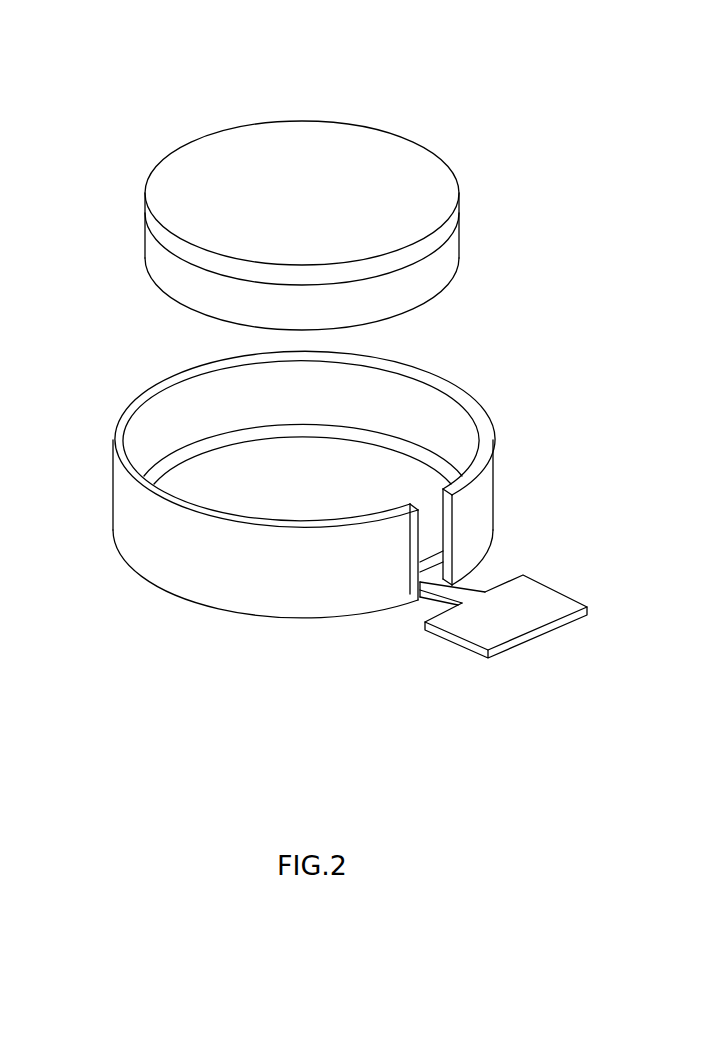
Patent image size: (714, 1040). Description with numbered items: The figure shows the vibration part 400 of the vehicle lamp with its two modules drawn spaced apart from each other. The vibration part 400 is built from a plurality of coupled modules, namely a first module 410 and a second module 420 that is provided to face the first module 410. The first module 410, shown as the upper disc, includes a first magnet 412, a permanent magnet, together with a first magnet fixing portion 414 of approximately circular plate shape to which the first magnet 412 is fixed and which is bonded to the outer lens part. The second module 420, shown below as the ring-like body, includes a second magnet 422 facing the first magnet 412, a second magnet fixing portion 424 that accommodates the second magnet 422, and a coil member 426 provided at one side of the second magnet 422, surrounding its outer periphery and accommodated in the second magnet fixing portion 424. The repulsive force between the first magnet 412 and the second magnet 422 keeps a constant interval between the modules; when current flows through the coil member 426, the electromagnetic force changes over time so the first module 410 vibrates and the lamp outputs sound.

The vibration part 400 is at (173, 80).
The first module 410 is at (307, 92).
The first magnet 412 is at (453, 251).
The first magnet fixing portion 414 is at (383, 148).
The second module 420 is at (455, 367).
The second magnet 422 is at (402, 483).
The second magnet fixing portion 424 is at (135, 517).
The coil member 426 is at (420, 562).